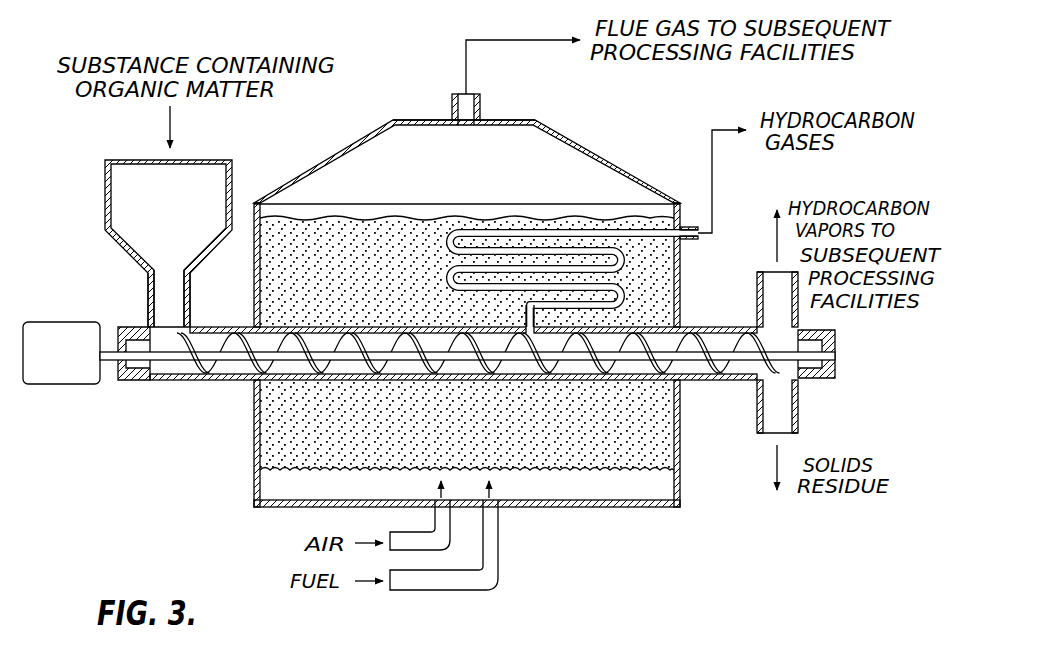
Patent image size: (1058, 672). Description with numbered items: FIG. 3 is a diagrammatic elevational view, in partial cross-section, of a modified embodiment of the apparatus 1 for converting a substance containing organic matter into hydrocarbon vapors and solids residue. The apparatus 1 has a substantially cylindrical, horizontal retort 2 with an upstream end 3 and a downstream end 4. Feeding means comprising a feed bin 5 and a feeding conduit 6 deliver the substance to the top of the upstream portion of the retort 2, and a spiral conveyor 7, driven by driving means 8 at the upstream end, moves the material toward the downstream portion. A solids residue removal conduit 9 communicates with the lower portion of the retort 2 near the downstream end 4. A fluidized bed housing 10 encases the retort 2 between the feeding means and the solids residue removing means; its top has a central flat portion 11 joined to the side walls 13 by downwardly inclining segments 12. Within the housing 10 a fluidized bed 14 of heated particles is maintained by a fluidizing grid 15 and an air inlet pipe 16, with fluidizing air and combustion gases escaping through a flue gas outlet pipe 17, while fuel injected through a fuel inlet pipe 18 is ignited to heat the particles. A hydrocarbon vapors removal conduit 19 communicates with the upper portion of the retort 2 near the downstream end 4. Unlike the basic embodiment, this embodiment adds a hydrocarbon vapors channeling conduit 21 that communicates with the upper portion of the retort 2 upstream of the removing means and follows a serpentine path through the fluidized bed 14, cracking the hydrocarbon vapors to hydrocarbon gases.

The apparatus 1 is at (477, 303).
The retort 2 is at (212, 382).
The upstream end 3 is at (120, 374).
The downstream end 4 is at (836, 362).
The feed bin 5 is at (105, 206).
The feeding conduit 6 is at (150, 297).
The spiral conveyor 7 is at (706, 346).
The driving means 8 is at (80, 385).
The solids residue removal conduit 9 is at (799, 399).
The fluidized bed housing 10 is at (684, 263).
The flat portion 11 is at (523, 120).
The downwardly inclining segments 12 is at (349, 147).
The side walls 13 is at (254, 285).
The fluidized bed 14 is at (648, 291).
The fluidizing grid 15 is at (264, 483).
The air inlet pipe 16 is at (412, 530).
The flue gas outlet pipe 17 is at (451, 105).
The fuel inlet pipe 18 is at (445, 592).
The hydrocarbon vapors removal conduit 19 is at (798, 313).
The hydrocarbon vapors channeling conduit 21 is at (698, 239).